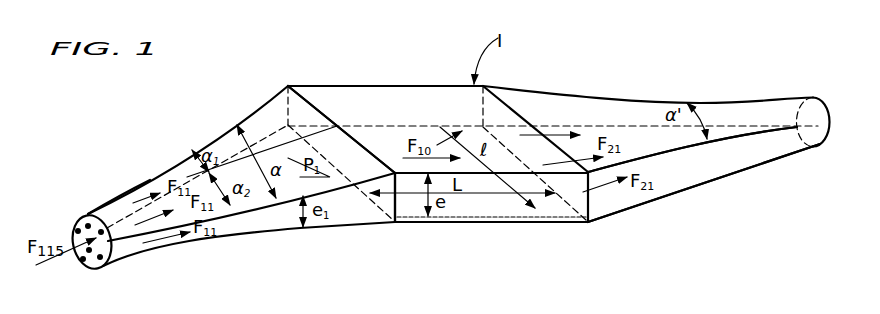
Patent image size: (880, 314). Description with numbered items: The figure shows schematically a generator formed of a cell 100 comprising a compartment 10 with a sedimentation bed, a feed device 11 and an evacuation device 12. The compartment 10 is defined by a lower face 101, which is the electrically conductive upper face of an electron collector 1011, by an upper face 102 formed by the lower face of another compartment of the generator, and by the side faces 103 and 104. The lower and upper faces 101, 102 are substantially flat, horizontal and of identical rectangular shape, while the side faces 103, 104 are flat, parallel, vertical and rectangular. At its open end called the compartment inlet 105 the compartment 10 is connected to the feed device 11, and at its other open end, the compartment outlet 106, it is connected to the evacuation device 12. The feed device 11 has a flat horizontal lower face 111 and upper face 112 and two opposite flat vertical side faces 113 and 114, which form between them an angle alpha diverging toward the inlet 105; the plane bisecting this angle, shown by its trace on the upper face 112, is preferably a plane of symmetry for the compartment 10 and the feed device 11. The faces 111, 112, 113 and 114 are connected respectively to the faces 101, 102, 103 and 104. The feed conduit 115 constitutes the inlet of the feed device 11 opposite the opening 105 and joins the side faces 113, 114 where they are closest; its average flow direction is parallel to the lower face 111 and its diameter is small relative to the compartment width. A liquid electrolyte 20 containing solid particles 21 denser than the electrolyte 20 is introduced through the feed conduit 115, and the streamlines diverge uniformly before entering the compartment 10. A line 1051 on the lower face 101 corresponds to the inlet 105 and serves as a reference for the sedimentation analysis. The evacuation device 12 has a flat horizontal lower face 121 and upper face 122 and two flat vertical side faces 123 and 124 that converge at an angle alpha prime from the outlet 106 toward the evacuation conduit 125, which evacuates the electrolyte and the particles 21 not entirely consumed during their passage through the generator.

The cell 100 is at (308, 78).
The compartment 10 is at (448, 86).
The lower face 101 is at (582, 196).
The electron collector 1011 is at (500, 220).
The upper face 102 is at (387, 86).
The side face 103 is at (412, 208).
The side face 104 is at (357, 122).
The compartment inlet 105 is at (350, 162).
The line of the lower face 1051 is at (386, 216).
The compartment outlet 106 is at (513, 130).
The feed device 11 is at (195, 151).
The lower face 111 is at (278, 230).
The upper face 112 is at (255, 126).
The side face 113 is at (318, 220).
The side face 114 is at (268, 124).
The feed conduit 115 is at (107, 205).
The evacuation device 12 is at (742, 102).
The lower face 121 is at (663, 193).
The upper face 122 is at (650, 158).
The side face 123 is at (723, 157).
The side face 124 is at (614, 123).
The evacuation conduit 125 is at (806, 98).
The liquid electrolyte 20 is at (101, 267).
The solid particles 21 is at (88, 223).